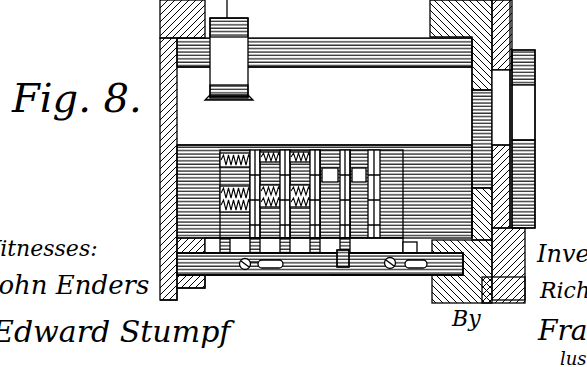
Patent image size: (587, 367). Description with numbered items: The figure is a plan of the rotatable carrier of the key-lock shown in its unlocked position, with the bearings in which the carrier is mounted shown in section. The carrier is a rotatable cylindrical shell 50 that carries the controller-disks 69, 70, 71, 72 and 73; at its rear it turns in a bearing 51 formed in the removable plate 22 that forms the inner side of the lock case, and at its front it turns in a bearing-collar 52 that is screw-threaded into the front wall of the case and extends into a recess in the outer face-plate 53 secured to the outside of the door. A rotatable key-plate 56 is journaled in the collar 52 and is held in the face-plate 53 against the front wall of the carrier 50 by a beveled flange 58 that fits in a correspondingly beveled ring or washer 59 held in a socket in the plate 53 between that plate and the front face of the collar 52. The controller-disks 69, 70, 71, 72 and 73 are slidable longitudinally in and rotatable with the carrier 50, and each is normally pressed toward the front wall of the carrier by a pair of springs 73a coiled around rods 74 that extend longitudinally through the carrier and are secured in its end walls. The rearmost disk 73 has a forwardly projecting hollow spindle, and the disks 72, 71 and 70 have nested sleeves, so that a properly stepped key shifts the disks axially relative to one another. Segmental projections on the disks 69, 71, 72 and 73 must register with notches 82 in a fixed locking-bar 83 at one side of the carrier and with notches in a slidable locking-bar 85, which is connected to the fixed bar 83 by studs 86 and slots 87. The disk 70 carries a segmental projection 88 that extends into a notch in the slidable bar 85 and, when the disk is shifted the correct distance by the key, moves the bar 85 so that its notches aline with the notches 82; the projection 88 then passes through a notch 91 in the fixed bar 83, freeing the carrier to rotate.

The removable plate 22 is at (161, 150).
The rotatable cylindrical shell 50 is at (324, 138).
The bearing 51 is at (176, 38).
The bearing-collar 52 is at (480, 15).
The outer face-plate 53 is at (522, 38).
The rotatable key-plate 56 is at (525, 110).
The beveled flange 58 is at (500, 127).
The beveled ring or washer 59 is at (522, 243).
The controller-disk 69 is at (376, 162).
The controller-disk 70 is at (347, 165).
The controller-disk 71 is at (315, 168).
The controller-disk 72 is at (285, 165).
The rearmost controller-disk 73 is at (257, 162).
The springs 73a is at (222, 163).
The rods 74 is at (235, 160).
The notches 82 is at (290, 250).
The fixed locking-bar 83 is at (325, 265).
The slidable locking-bar 85 is at (250, 264).
The studs 86 is at (240, 268).
The slots 87 is at (260, 267).
The segmental projection 88 is at (345, 275).
The notch 91 is at (347, 268).